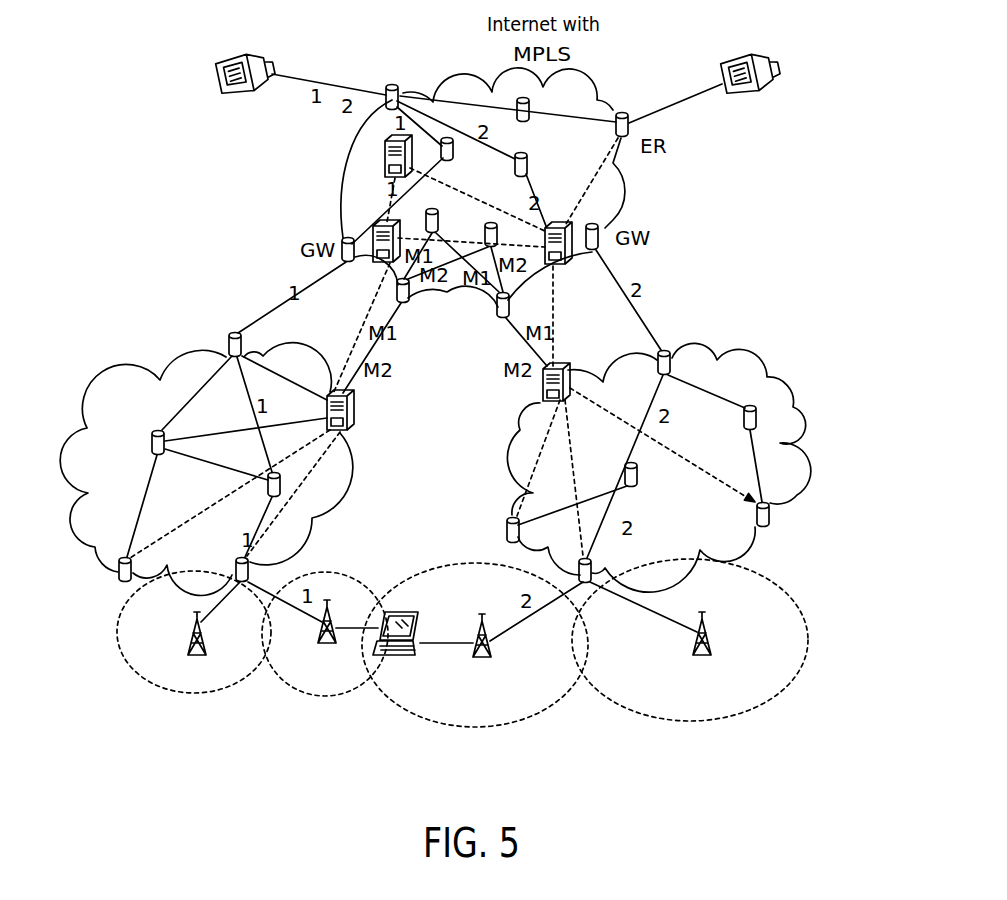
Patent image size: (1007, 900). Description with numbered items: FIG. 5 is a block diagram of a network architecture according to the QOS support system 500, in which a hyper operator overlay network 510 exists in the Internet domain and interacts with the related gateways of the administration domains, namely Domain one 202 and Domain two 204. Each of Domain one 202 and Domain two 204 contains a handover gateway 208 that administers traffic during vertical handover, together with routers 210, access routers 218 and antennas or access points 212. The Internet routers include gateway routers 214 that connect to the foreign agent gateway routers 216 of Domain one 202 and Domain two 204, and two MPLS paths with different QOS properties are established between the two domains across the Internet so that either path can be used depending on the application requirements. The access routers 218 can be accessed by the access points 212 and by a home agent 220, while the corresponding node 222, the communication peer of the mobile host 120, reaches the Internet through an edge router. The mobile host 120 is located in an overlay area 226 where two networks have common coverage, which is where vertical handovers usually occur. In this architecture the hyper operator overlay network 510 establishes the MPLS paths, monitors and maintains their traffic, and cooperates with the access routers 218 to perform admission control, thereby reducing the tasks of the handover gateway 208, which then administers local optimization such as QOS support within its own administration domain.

The QOS support system 500 is at (126, 131).
The home agent 220 is at (250, 57).
The corresponding node 222 is at (753, 92).
The access router 218 is at (398, 84).
The router 210 is at (530, 121).
The hyper operator overlay network 510 is at (384, 165).
The foreign agent gateway router 216 is at (227, 344).
The gateway router 214 is at (441, 302).
The handover gateway 208 is at (353, 402).
The Domain one 202 is at (68, 447).
The Domain two 204 is at (797, 474).
The access point 212 is at (195, 657).
The mobile host 120 is at (398, 657).
The overlay area 226 is at (387, 658).